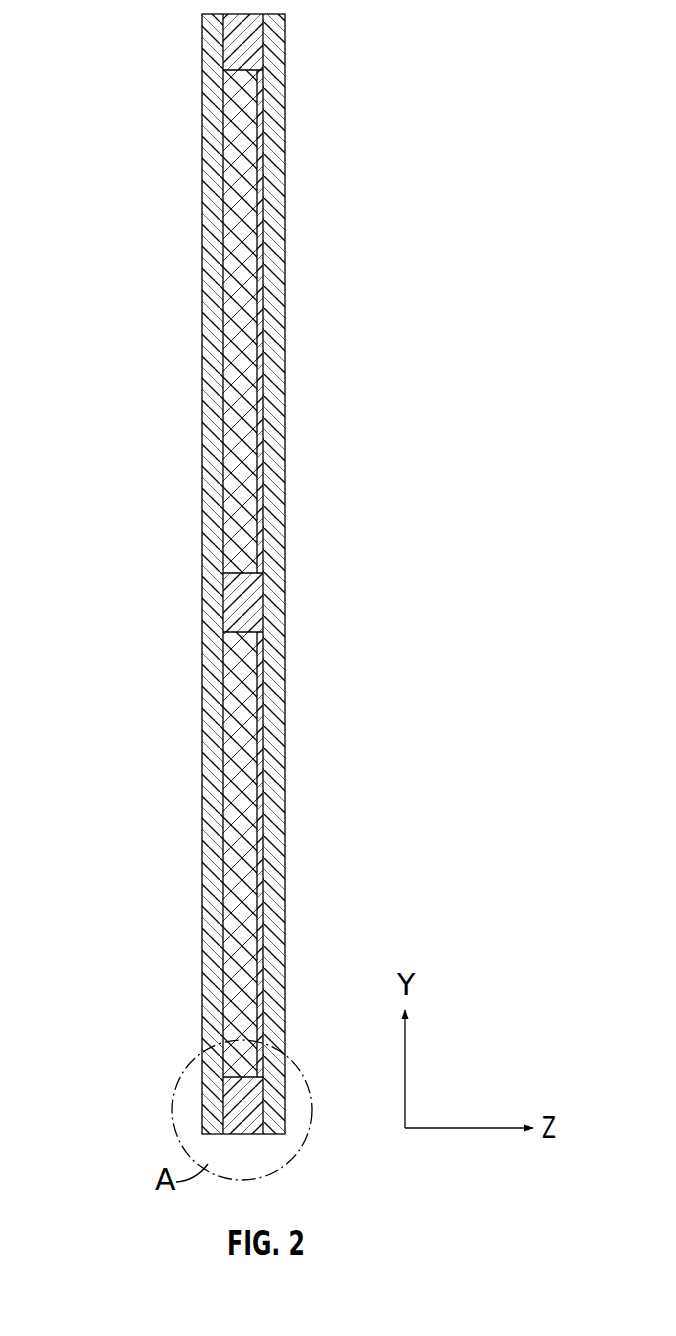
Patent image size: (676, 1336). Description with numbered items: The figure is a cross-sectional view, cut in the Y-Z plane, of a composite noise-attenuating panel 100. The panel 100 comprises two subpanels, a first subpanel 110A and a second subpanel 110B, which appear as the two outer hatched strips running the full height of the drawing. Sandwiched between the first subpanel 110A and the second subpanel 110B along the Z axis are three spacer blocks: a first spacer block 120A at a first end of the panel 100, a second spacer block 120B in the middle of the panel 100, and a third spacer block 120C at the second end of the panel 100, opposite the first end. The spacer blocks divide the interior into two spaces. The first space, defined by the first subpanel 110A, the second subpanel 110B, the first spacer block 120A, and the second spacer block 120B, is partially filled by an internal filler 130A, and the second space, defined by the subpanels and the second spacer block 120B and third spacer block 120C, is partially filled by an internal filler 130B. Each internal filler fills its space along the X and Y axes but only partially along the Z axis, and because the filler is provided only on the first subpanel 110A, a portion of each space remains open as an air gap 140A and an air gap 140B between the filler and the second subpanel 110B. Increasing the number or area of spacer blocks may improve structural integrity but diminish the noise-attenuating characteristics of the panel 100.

The composite noise-attenuating panel 100 is at (222, 574).
The first subpanel 110A is at (233, 883).
The second subpanel 110B is at (245, 306).
The first spacer block 120A is at (221, 1100).
The second spacer block 120B is at (221, 597).
The third spacer block 120C is at (223, 42).
The internal filler 130A is at (242, 757).
The internal filler 130B is at (228, 298).
The air gap 140A is at (271, 814).
The air gap 140B is at (263, 322).